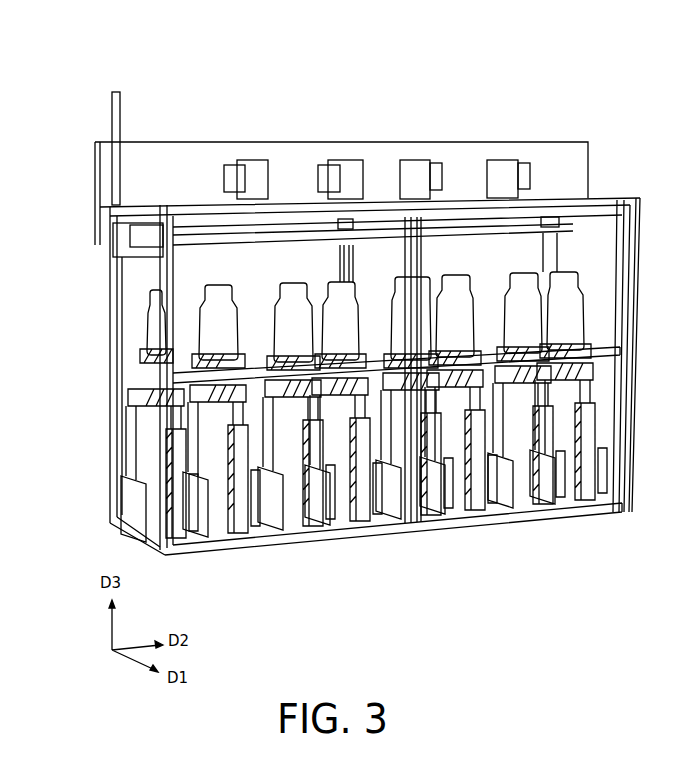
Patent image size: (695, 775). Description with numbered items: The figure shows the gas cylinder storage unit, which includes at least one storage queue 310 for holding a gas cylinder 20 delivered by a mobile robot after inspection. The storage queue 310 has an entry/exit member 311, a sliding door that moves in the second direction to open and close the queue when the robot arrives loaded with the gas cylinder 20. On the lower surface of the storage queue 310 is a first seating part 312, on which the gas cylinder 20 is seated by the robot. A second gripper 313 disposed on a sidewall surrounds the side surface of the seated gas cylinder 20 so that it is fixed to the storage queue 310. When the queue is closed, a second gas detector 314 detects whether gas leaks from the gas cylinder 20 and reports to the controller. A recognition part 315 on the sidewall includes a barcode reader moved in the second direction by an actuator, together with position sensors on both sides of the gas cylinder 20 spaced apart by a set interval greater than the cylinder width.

The storage queue 310 is at (343, 40).
The entry/exit member 311 is at (135, 284).
The first seating part 312 is at (145, 503).
The second gripper 313 is at (150, 397).
The second gas detector 314 is at (112, 120).
The recognition part 315 is at (112, 236).
The gas cylinder 20 is at (153, 352).